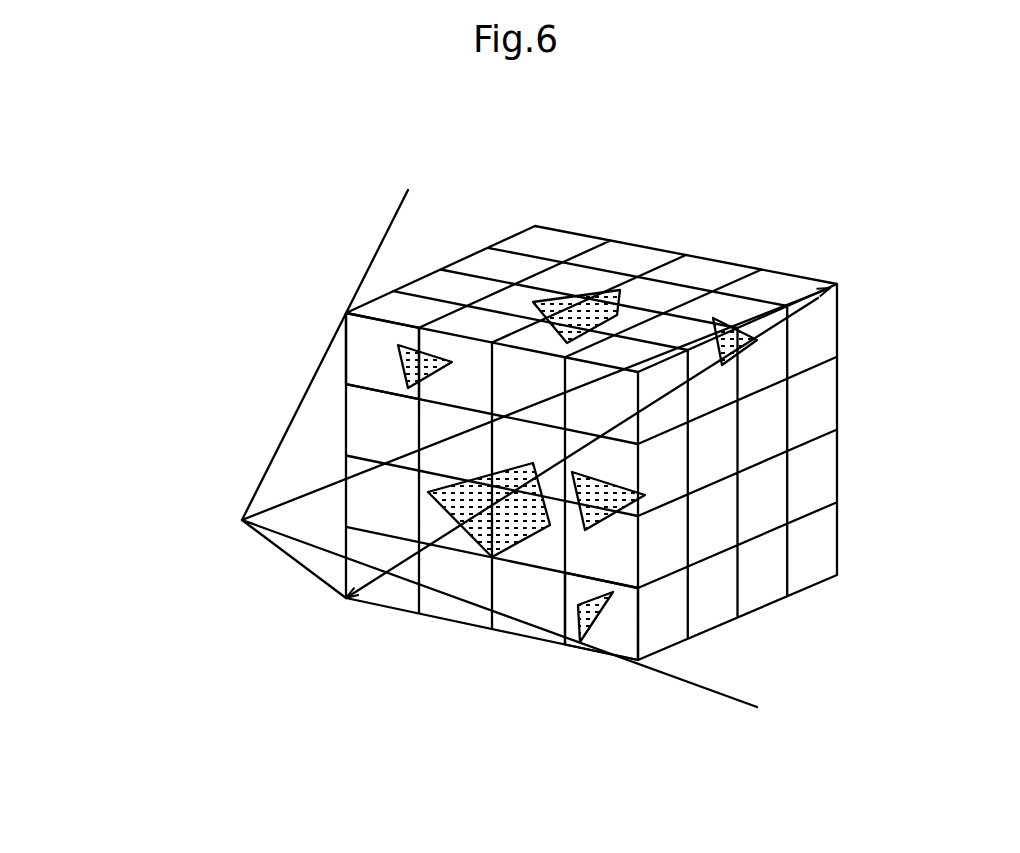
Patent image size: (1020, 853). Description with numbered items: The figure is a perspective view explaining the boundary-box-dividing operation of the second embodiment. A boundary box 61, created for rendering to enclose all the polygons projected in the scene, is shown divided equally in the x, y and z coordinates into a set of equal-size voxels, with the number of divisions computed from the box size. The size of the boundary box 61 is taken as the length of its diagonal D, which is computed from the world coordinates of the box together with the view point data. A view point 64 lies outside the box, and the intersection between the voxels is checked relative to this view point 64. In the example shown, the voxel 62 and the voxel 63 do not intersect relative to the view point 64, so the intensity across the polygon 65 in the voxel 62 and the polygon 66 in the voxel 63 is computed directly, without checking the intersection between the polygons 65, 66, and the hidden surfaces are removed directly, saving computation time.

The boundary box 61 is at (725, 167).
The voxel 62 is at (370, 362).
The voxel 63 is at (605, 620).
The view point 64 is at (242, 520).
The polygon 65 is at (408, 355).
The polygon 66 is at (578, 630).
The diagonal of the boundary box D is at (680, 353).